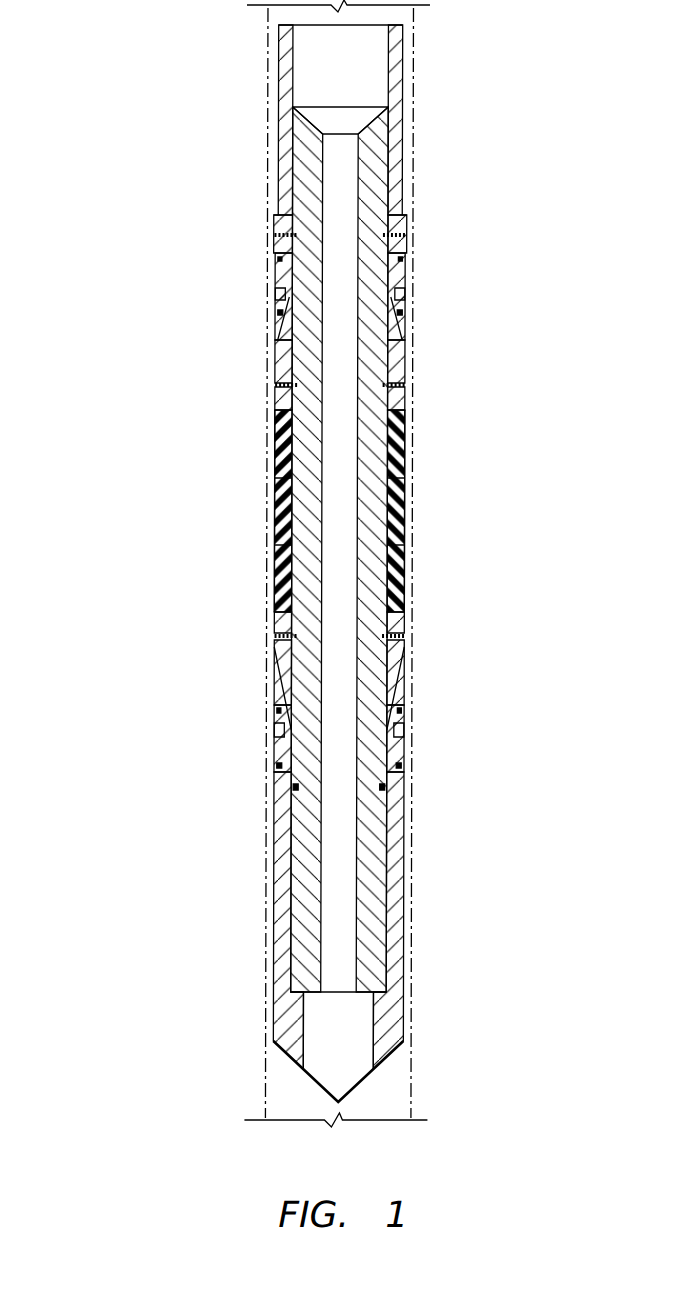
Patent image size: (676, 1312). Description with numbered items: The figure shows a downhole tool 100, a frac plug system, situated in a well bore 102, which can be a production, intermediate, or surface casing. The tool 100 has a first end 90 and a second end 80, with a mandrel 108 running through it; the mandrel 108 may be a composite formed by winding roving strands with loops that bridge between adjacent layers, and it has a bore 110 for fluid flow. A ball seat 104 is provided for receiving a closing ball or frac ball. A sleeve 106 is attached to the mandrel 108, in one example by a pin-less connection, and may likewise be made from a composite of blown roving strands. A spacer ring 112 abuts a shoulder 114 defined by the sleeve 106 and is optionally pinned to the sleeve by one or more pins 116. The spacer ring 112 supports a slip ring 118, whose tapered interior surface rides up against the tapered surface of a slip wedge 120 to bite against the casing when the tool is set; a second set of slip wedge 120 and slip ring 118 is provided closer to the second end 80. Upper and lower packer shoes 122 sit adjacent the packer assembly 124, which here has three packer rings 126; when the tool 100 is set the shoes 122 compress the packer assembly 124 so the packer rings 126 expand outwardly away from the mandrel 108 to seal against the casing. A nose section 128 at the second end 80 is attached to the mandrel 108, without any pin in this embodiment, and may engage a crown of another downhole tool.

The second end 80 is at (206, 1011).
The first end 90 is at (205, 74).
The downhole tool 100 is at (148, 303).
The well bore 102 is at (276, 46).
The ball seat 104 is at (368, 108).
The sleeve 106 is at (404, 50).
The mandrel 108 is at (300, 908).
The bore 110 is at (337, 853).
The spacer ring 112 is at (407, 228).
The shoulder 114 is at (402, 203).
The pins 116 is at (274, 233).
The slip ring 118 is at (275, 755).
The slip wedge 120 is at (275, 364).
The packer shoe 122 is at (275, 614).
The packer assembly 124 is at (228, 507).
The packer rings 126 is at (407, 580).
The nose section 128 is at (388, 1010).